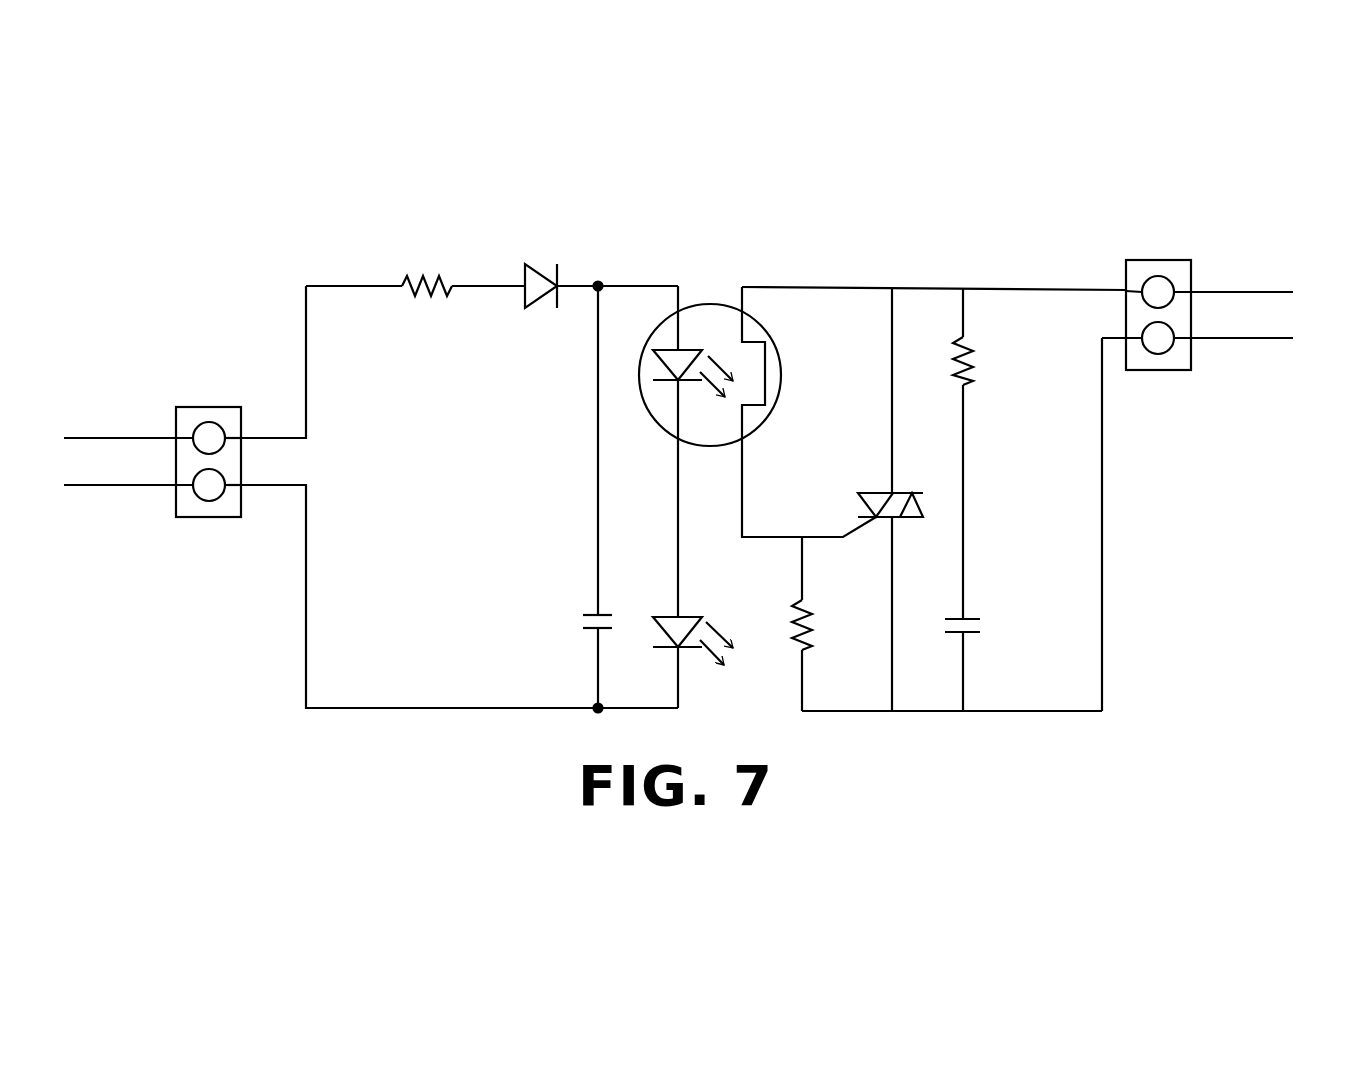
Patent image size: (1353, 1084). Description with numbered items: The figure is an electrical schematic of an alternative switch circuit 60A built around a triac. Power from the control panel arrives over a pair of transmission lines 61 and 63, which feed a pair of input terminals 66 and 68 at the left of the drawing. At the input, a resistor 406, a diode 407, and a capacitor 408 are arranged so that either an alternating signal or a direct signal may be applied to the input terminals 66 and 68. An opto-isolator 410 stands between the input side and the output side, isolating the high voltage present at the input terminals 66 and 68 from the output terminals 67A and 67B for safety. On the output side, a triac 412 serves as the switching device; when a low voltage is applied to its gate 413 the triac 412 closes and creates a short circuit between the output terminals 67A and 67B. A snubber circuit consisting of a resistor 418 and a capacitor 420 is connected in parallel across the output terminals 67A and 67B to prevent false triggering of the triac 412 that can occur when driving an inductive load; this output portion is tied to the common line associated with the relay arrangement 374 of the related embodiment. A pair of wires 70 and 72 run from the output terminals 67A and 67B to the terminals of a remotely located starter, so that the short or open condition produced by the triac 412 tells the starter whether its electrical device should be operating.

The switch circuit 60A is at (270, 650).
The transmission line 61 is at (90, 437).
The transmission line 63 is at (88, 487).
The input terminal 66 is at (209, 422).
The input terminal 68 is at (206, 501).
The resistor 406 is at (383, 284).
The diode 407 is at (660, 608).
The capacitor 408 is at (578, 598).
The opto-isolator 410 is at (709, 304).
The triac 412 is at (878, 492).
The gate 413 is at (876, 520).
The resistor 418 is at (968, 385).
The capacitor 420 is at (967, 636).
The direct current relay 374 is at (873, 731).
The output terminal 67A is at (1158, 276).
The output terminal 67B is at (1158, 354).
The wire 70 is at (1273, 292).
The wire 72 is at (1273, 338).